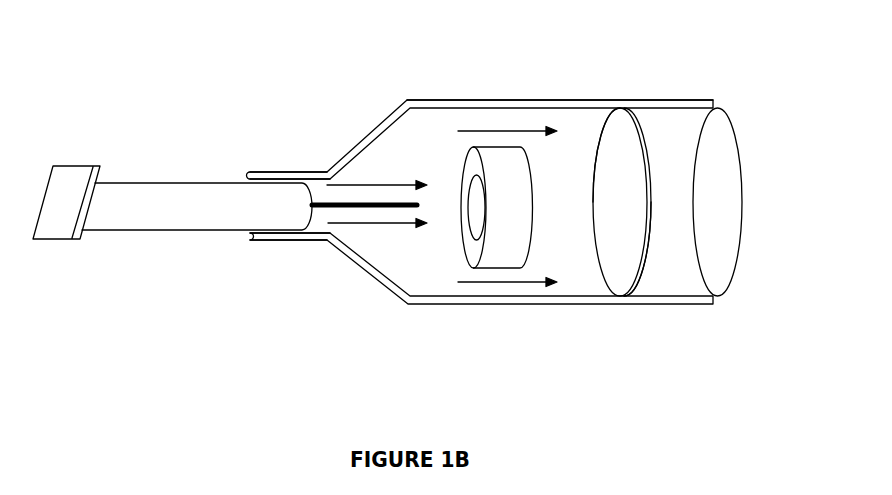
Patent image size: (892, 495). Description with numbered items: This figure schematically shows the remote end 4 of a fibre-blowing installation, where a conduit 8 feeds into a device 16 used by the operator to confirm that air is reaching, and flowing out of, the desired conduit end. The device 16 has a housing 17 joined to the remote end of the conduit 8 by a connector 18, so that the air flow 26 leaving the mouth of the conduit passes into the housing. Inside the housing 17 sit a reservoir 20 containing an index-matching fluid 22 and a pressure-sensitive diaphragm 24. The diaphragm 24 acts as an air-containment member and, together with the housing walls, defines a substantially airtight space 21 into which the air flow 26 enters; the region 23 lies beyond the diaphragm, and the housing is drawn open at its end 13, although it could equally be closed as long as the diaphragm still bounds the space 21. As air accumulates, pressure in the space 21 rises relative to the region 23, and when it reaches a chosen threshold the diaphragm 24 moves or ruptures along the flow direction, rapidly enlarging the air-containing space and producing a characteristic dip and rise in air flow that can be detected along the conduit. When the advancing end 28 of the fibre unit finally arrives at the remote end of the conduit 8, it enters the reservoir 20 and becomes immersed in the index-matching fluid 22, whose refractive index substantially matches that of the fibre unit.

The remote end 4 is at (166, 98).
The conduit 8 is at (158, 230).
The open end 13 is at (709, 204).
The device 16 is at (625, 84).
The housing 17 is at (482, 100).
The connector 18 is at (310, 198).
The reservoir 20 is at (475, 248).
The space 21 is at (581, 280).
The index-matching fluid 22 is at (473, 220).
The region beyond the diaphragm 23 is at (654, 281).
The diaphragm 24 is at (627, 268).
The air flow 26 is at (355, 185).
The advancing end of the fibre unit 28 is at (388, 203).